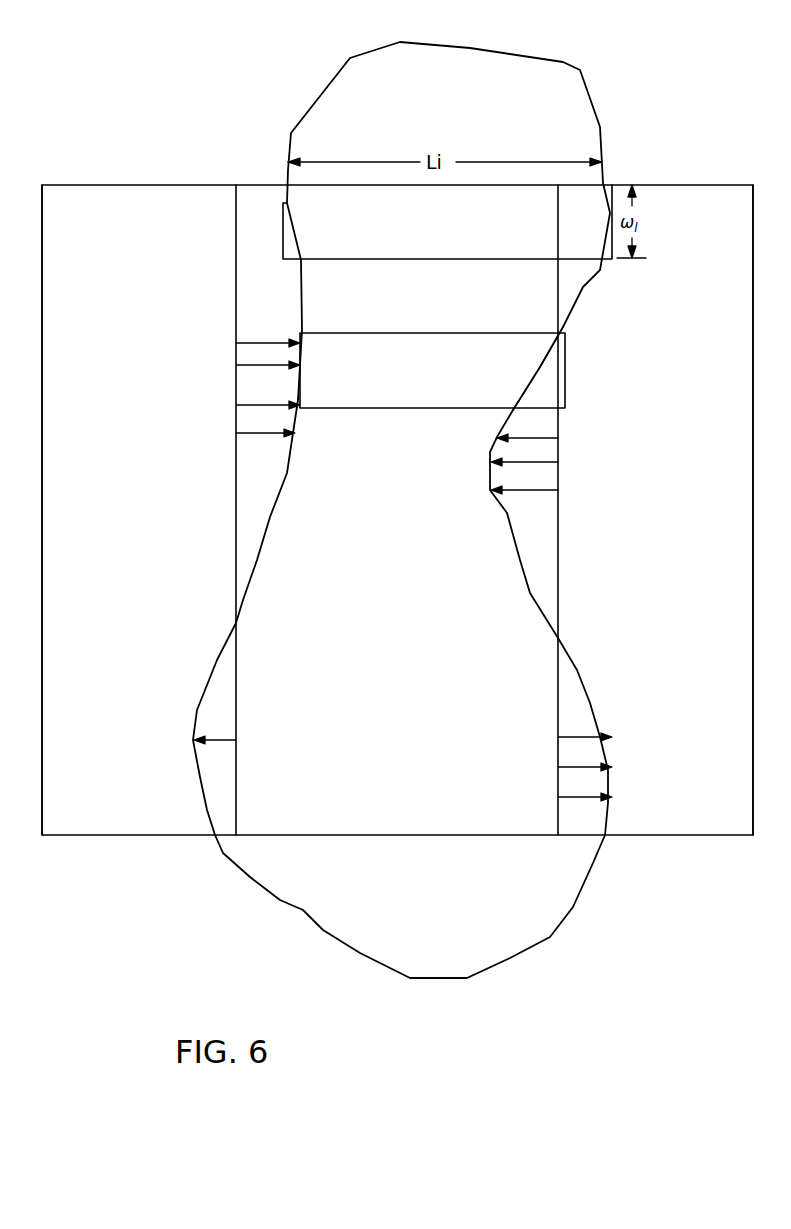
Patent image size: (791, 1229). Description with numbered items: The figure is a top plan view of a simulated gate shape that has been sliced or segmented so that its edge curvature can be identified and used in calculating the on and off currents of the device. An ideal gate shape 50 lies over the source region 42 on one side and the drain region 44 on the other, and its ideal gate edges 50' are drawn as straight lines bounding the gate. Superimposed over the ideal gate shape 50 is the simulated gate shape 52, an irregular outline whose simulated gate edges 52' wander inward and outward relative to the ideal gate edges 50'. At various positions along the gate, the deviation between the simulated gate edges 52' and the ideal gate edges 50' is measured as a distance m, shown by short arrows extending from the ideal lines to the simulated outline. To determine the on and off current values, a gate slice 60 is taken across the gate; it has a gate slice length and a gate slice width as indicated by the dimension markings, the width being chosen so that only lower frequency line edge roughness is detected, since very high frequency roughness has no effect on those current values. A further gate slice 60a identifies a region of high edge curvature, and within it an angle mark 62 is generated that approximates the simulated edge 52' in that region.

The source region 42 is at (115, 460).
The drain region 44 is at (704, 473).
The ideal gate shape 50 is at (407, 510).
The ideal gate edges 50' is at (401, 425).
The simulated gate shape 52 is at (401, 497).
The simulated gate edges 52' is at (401, 606).
The gate slice 60 is at (400, 187).
The gate slice 60a is at (398, 334).
The angle mark 62 is at (540, 367).
The distance m is at (246, 365).